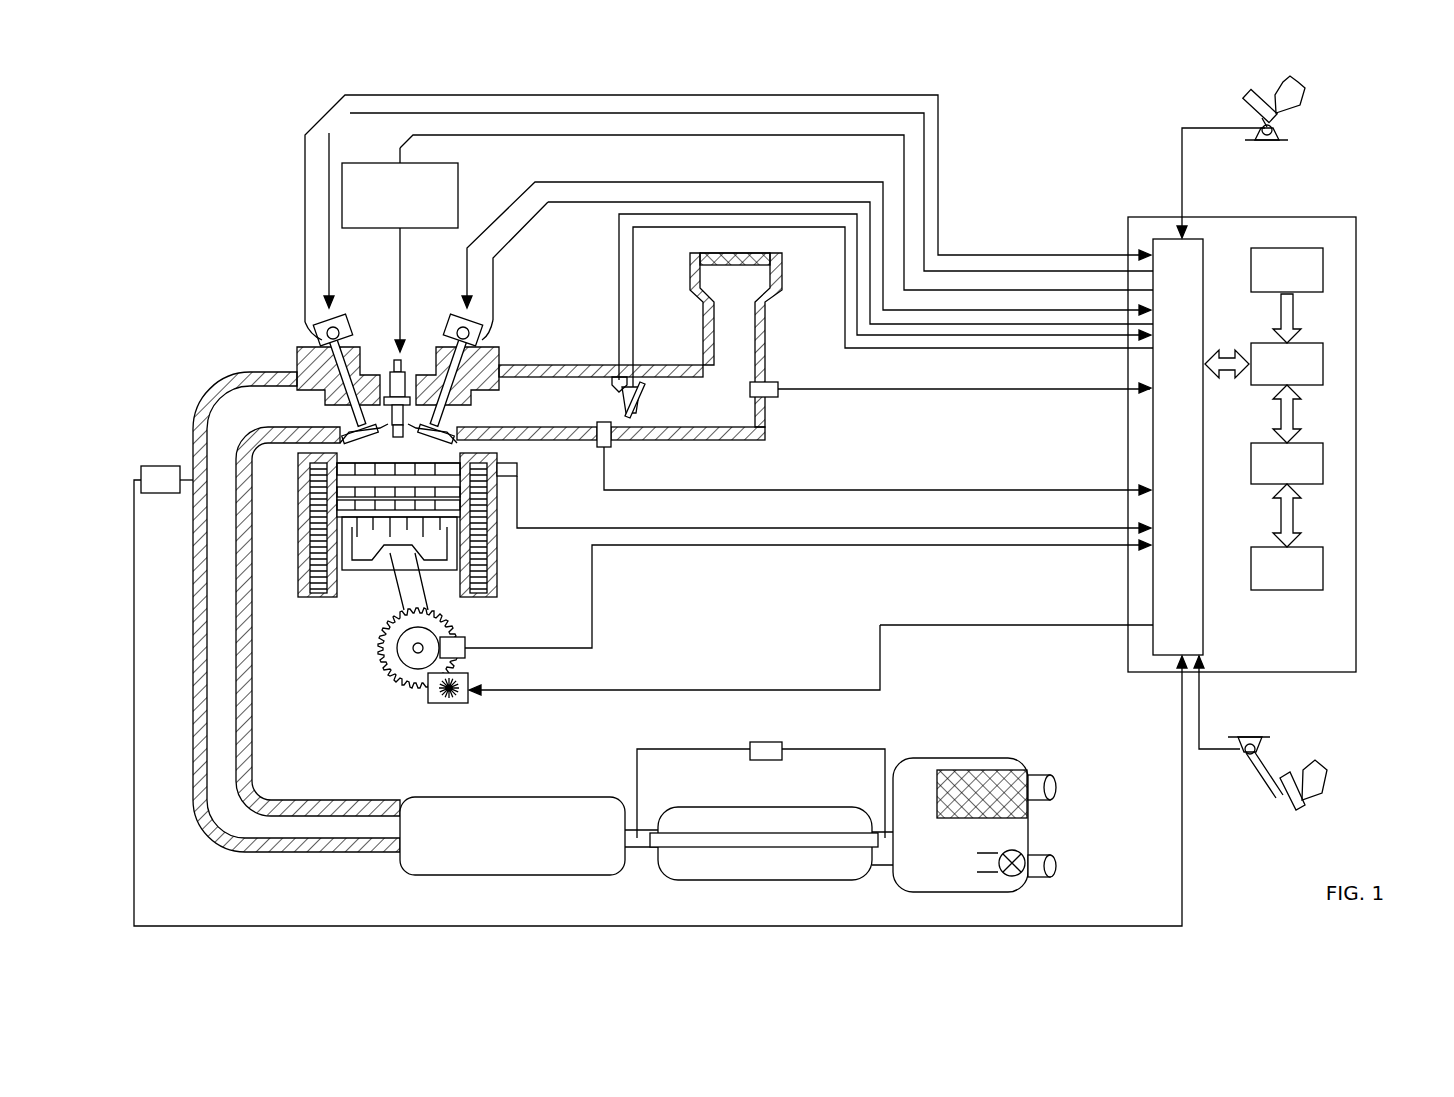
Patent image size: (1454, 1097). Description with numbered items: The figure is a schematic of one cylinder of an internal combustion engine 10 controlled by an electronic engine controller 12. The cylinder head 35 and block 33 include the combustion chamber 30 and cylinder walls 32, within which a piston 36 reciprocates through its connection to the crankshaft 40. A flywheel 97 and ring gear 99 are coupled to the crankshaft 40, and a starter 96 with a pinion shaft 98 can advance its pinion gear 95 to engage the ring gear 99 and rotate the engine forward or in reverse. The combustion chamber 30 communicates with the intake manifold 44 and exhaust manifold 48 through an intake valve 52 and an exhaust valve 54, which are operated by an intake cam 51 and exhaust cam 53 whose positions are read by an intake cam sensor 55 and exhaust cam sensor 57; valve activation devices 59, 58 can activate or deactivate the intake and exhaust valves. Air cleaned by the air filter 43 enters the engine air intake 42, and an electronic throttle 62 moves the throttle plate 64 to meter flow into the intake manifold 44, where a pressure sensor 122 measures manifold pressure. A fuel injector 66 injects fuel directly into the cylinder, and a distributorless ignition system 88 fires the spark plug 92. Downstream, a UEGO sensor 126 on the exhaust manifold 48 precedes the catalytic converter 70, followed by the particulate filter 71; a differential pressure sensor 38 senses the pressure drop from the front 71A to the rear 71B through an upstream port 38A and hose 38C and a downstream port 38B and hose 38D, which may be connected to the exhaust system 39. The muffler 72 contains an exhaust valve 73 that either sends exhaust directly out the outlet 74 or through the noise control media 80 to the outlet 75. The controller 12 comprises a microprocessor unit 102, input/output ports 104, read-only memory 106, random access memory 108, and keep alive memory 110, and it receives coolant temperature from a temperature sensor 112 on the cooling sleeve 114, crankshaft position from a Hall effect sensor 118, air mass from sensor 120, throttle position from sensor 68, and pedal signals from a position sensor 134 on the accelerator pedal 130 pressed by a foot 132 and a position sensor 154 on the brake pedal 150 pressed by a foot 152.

The internal combustion engine 10 is at (228, 298).
The electronic engine controller 12 is at (1356, 222).
The combustion chamber 30 is at (397, 440).
The cylinder walls 32 is at (342, 592).
The block 33 is at (293, 494).
The cylinder head 35 is at (290, 342).
The piston 36 is at (392, 568).
The differential pressure sensor 38 is at (766, 742).
The upstream port 38A is at (750, 749).
The downstream port 38B is at (782, 749).
The hose 38C is at (668, 749).
The hose 38D is at (885, 755).
The exhaust system 39 is at (606, 770).
The crankshaft 40 is at (397, 672).
The engine air intake 42 is at (696, 342).
The air filter 43 is at (750, 268).
The intake manifold 44 is at (505, 413).
The exhaust manifold 48 is at (254, 420).
The intake cam 51 is at (460, 325).
The intake valve 52 is at (445, 405).
The exhaust cam 53 is at (336, 325).
The exhaust valve 54 is at (350, 420).
The intake cam sensor 55 is at (485, 338).
The exhaust cam sensor 57 is at (318, 335).
The valve activation device 58 is at (346, 332).
The valve activation device 59 is at (462, 335).
The electronic throttle 62 is at (640, 402).
The throttle plate 64 is at (630, 415).
The fuel injector 66 is at (517, 472).
The throttle position sensor 68 is at (614, 378).
The catalytic converter 70 is at (450, 797).
The particulate filter 71 is at (705, 807).
The front of particulate filter 71A is at (658, 820).
The rear of particulate filter 71B is at (872, 820).
The muffler 72 is at (905, 758).
The exhaust valve 73 is at (1003, 852).
The outlet 74 is at (1050, 856).
The outlet 75 is at (1050, 778).
The noise control media 80 is at (990, 790).
The distributorless ignition system 88 is at (356, 163).
The spark plug 92 is at (404, 362).
The pinion gear 95 is at (452, 700).
The starter 96 is at (465, 702).
The flywheel 97 is at (385, 660).
The pinion shaft 98 is at (445, 700).
The ring gear 99 is at (410, 690).
The microprocessor unit 102 is at (1323, 362).
The input/output ports 104 is at (1205, 245).
The read-only memory 106 is at (1323, 268).
The random access memory 108 is at (1323, 462).
The keep alive memory 110 is at (1323, 566).
The temperature sensor 112 is at (831, 502).
The cooling sleeve 114 is at (495, 548).
The Hall effect sensor 118 is at (465, 640).
The air mass sensor 120 is at (778, 384).
The pressure sensor 122 is at (600, 446).
The Universal Exhaust Gas Oxygen sensor 126 is at (145, 468).
The accelerator pedal 130 is at (1250, 104).
The foot 132 is at (1300, 90).
The position sensor 134 is at (1275, 129).
The brake pedal 150 is at (1277, 797).
The foot 152 is at (1305, 770).
The position sensor 154 is at (1234, 740).